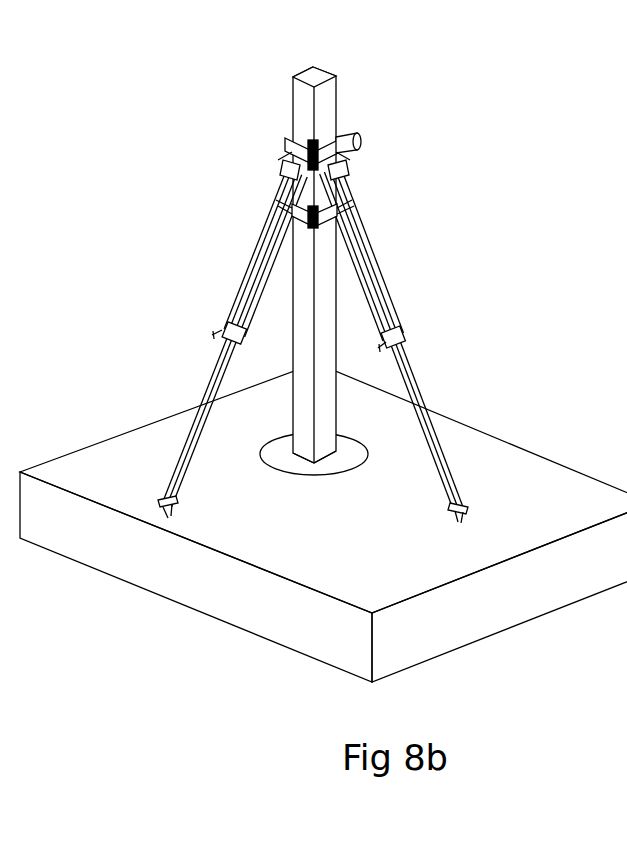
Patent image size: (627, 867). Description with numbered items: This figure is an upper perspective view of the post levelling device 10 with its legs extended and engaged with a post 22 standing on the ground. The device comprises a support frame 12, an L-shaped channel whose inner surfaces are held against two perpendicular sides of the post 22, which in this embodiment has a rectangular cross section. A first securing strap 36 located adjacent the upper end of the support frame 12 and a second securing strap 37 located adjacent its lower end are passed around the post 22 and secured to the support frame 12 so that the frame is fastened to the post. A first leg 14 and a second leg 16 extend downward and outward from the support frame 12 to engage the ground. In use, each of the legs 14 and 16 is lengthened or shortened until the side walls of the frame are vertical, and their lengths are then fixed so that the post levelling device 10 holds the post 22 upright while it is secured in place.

The post levelling device 10 is at (170, 128).
The support frame 12 is at (283, 132).
The post 22 is at (345, 75).
The first leg 14 is at (217, 365).
The second leg 16 is at (432, 398).
The first securing strap 36 is at (292, 145).
The second securing strap 37 is at (300, 215).